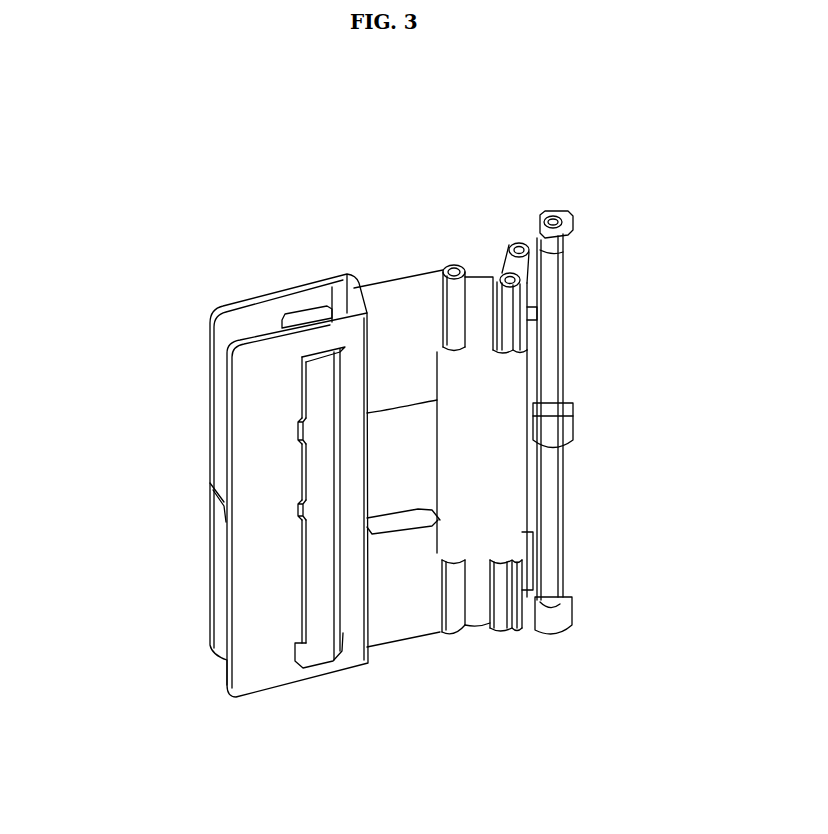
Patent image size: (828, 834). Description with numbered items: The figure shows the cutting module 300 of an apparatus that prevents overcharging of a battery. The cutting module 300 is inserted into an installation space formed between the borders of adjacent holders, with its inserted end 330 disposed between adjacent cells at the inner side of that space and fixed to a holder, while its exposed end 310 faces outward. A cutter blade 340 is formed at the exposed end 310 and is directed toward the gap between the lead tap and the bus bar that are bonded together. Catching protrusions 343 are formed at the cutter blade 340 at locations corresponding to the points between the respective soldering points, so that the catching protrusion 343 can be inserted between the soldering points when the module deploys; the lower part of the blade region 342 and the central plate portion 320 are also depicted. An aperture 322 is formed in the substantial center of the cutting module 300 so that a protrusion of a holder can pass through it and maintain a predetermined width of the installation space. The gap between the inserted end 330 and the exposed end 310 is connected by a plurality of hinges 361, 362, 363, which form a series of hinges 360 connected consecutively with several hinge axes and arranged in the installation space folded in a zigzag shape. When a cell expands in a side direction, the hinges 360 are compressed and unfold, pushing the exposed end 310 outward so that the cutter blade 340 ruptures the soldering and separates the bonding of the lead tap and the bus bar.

The cutting module 300 is at (176, 518).
The exposed end 310 is at (259, 672).
The body plate 320 is at (413, 620).
The aperture 322 is at (414, 448).
The inserted end 330 is at (555, 540).
The cutter blade 340 is at (333, 626).
The lower protrusion 342 is at (298, 560).
The catching protrusion 343 is at (303, 423).
The hinge 360 is at (436, 237).
The hinge 361 is at (483, 277).
The hinge 362 is at (510, 268).
The hinge 363 is at (567, 277).